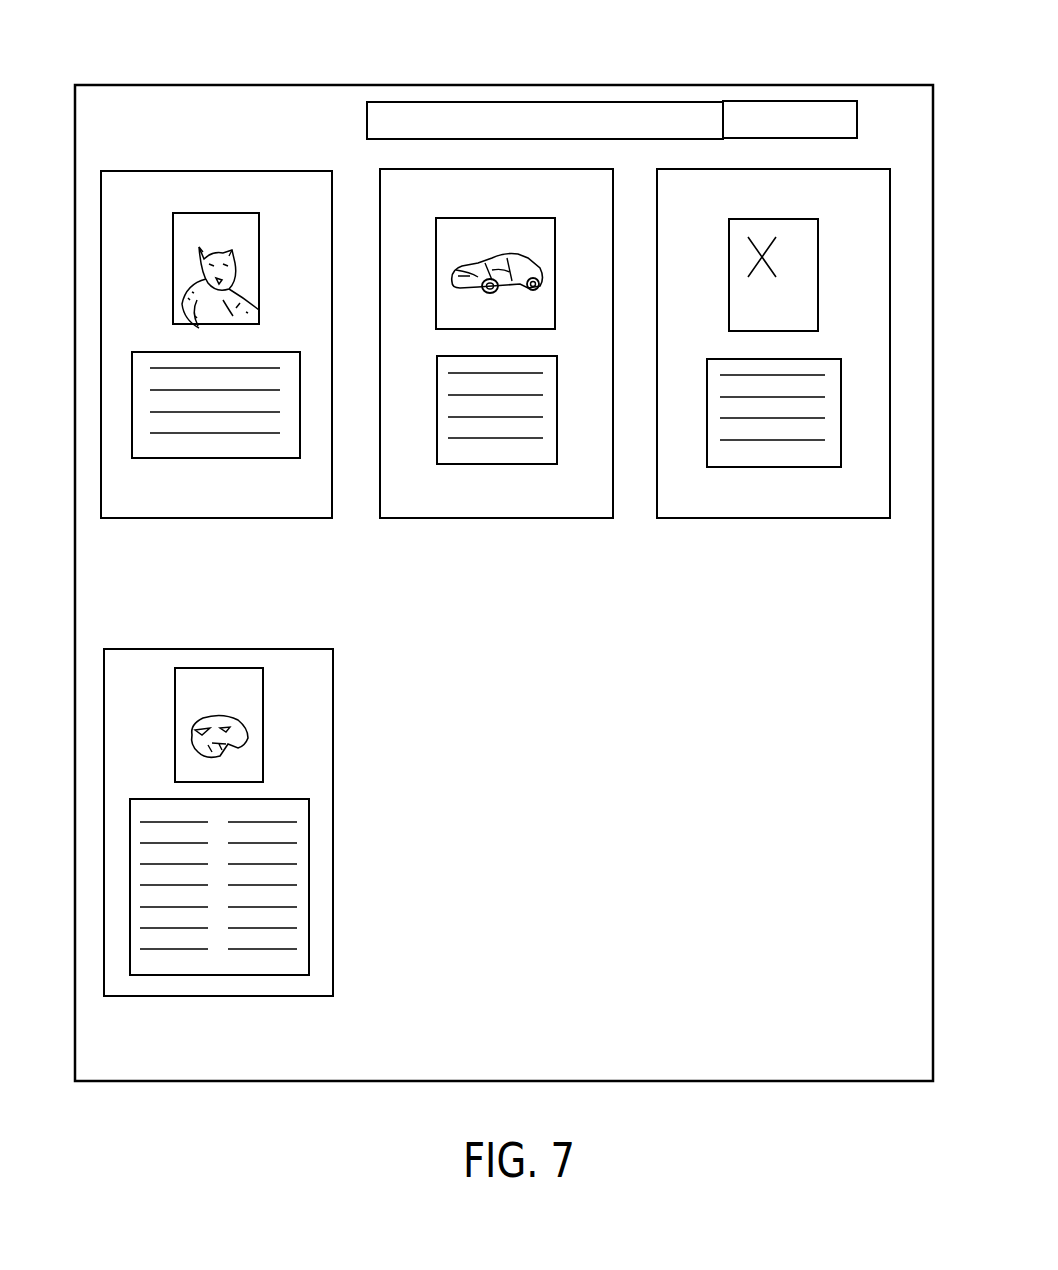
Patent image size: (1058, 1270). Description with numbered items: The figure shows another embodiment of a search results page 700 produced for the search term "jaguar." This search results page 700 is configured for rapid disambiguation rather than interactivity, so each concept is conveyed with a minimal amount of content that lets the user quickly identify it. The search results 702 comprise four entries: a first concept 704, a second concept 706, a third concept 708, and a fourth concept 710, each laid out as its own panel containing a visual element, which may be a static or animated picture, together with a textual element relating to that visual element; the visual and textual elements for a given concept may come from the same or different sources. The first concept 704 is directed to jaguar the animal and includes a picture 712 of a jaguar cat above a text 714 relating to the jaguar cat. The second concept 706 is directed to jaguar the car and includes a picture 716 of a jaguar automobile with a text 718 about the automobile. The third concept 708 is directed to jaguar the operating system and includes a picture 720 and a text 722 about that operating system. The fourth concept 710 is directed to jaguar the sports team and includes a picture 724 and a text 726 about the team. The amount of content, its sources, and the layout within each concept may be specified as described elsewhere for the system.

The search results page 700 is at (608, 55).
The search results 702 is at (542, 780).
The first concept 704 is at (215, 171).
The second concept 706 is at (590, 518).
The third concept 708 is at (868, 518).
The fourth concept 710 is at (217, 649).
The picture 712 is at (259, 267).
The text 714 is at (214, 458).
The picture 716 is at (555, 240).
The text 718 is at (497, 464).
The picture 720 is at (818, 243).
The text 722 is at (772, 467).
The picture 724 is at (255, 740).
The text 726 is at (309, 888).